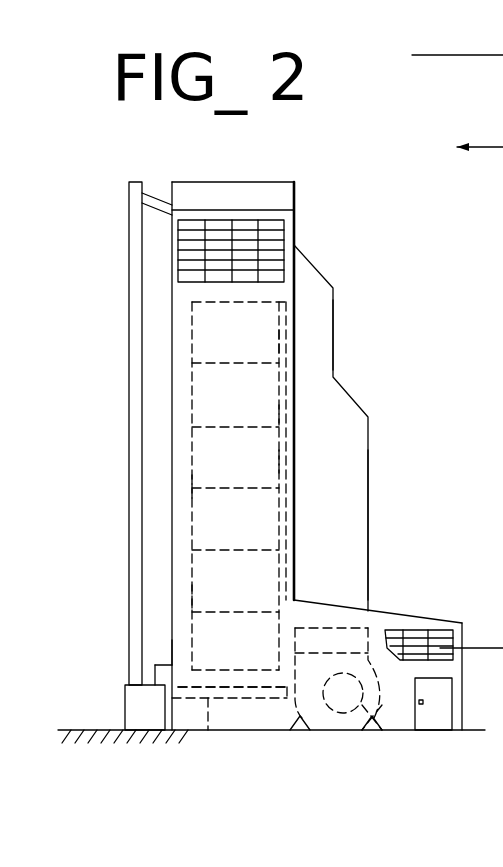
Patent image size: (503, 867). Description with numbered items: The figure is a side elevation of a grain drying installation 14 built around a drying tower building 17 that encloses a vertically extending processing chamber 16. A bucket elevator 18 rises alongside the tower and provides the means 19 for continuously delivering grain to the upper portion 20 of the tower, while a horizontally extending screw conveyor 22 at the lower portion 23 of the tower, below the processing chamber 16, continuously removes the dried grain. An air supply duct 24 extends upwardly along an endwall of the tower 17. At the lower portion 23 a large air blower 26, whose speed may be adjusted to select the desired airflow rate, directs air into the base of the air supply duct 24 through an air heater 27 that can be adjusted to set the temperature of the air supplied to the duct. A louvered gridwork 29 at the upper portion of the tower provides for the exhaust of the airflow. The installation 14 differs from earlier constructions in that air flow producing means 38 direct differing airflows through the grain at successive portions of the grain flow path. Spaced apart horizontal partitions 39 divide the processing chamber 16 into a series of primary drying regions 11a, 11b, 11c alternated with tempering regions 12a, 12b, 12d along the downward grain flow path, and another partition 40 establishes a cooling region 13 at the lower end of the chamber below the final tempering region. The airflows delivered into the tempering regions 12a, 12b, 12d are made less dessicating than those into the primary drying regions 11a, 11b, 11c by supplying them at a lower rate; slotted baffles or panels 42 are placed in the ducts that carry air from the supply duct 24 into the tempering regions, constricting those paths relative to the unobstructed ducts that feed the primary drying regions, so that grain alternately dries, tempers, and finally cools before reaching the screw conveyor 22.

The primary drying region 11a is at (250, 292).
The primary drying region 11b is at (252, 407).
The primary drying region 11c is at (252, 532).
The tempering region 12a is at (253, 345).
The tempering region 12b is at (253, 470).
The compartment 12d is at (253, 594).
The cooling region 13 is at (246, 655).
The drying installation 14 is at (428, 365).
The processing chamber 16 is at (277, 403).
The drying tower building 17 is at (268, 172).
The bucket elevator 18 is at (129, 335).
The means for continuously delivering grain 19 is at (146, 190).
The upper portion of the tower 20 is at (272, 204).
The screw conveyor 22 is at (208, 740).
The lower portion of the tower 23 is at (160, 648).
The air supply duct 24 is at (369, 518).
The air blower 26 is at (375, 729).
The air heater 27 is at (352, 643).
The louvered gridwork 29 is at (270, 248).
The air flow producing means 38 is at (299, 342).
The horizontal partitions 39 is at (212, 490).
The partition 40 is at (204, 600).
The slotted panels 42 is at (288, 468).